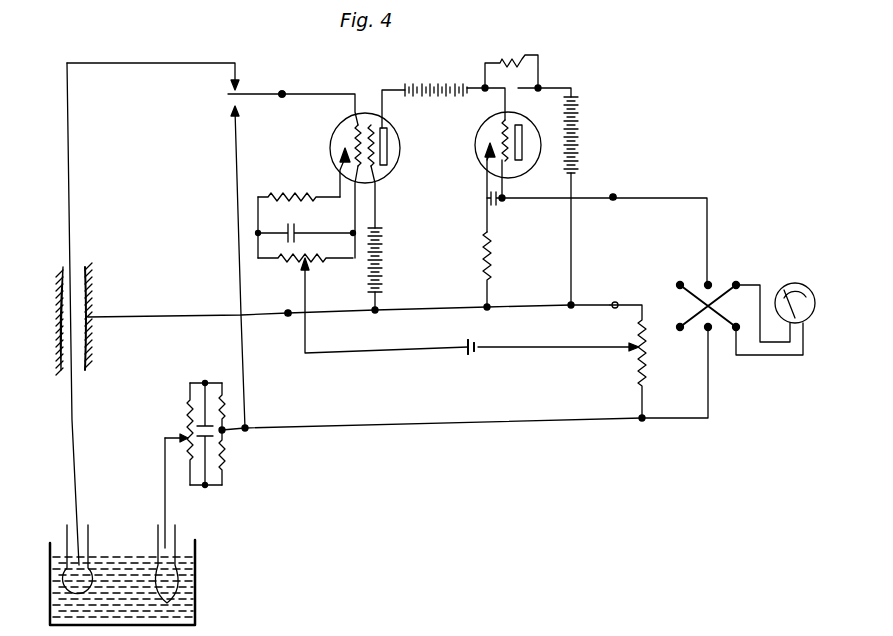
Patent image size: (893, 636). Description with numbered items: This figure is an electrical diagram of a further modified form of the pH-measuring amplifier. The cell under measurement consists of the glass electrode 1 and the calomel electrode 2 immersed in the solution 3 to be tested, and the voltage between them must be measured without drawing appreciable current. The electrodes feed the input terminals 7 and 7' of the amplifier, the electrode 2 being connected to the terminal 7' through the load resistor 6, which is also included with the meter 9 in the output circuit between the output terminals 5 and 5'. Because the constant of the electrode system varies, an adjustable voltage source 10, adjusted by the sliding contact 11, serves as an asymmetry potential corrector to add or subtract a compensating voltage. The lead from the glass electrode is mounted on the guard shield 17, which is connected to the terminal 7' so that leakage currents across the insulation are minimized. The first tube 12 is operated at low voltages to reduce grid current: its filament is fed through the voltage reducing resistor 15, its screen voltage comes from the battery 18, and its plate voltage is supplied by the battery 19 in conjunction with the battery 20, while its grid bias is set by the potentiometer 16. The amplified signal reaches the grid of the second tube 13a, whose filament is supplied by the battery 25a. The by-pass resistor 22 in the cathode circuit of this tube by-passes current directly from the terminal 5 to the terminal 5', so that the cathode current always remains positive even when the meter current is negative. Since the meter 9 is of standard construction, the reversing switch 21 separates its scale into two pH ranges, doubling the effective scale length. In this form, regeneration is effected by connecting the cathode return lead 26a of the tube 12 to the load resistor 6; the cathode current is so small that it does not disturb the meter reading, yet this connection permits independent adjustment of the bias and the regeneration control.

The glass electrode 1 is at (90, 531).
The calomel electrode 2 is at (177, 530).
The solution 3 is at (126, 562).
The output terminal 5 is at (621, 186).
The output terminal 5' is at (626, 287).
The load resistor 6 is at (650, 362).
The input terminal 7 is at (288, 79).
The input terminal 7' is at (281, 332).
The meter 9 is at (808, 285).
The adjustable voltage source 10 is at (232, 466).
The sliding contact 11 is at (165, 437).
The tube 12 is at (392, 172).
The tube 13a is at (476, 147).
The voltage reducing resistor 15 is at (303, 182).
The potentiometer 16 is at (305, 263).
The guard shield 17 is at (57, 322).
The battery 18 is at (385, 259).
The battery 19 is at (439, 85).
The battery 20 is at (579, 124).
The reversing switch 21 is at (729, 282).
The by-pass resistor 22 is at (495, 257).
The battery 25a is at (499, 204).
The cathode return lead 26a is at (611, 350).